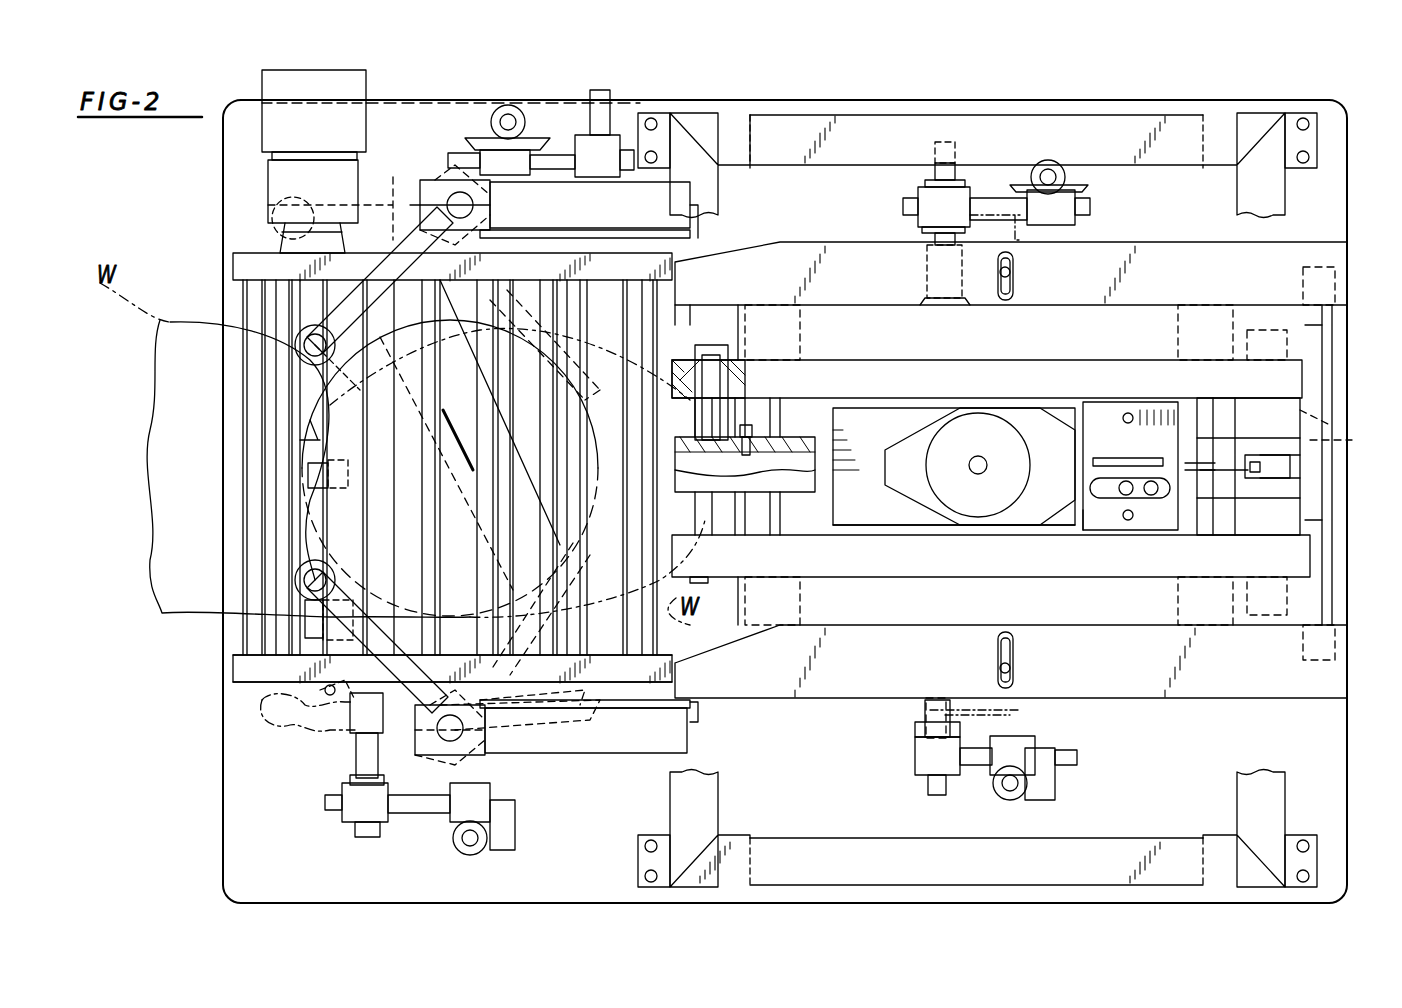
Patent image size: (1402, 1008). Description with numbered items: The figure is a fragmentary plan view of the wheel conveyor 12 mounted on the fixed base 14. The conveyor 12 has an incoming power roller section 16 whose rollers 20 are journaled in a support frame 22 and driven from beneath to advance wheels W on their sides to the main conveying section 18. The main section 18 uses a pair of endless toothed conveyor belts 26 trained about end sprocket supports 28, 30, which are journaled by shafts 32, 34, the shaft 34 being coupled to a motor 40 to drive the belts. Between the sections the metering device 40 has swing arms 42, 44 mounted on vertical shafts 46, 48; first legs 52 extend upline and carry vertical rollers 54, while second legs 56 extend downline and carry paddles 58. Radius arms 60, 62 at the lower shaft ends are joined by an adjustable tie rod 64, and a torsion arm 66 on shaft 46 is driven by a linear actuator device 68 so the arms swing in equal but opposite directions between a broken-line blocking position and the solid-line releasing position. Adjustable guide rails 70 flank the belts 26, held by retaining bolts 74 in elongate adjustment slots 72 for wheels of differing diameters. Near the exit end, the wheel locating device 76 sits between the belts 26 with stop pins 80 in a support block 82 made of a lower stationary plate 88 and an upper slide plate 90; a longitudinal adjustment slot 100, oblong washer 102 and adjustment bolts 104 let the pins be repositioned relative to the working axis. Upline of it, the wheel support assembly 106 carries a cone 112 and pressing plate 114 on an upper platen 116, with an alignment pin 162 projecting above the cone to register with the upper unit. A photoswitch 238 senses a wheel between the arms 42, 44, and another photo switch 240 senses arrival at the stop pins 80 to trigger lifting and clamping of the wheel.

The wheel conveyor 12 is at (200, 654).
The fixed base 14 is at (212, 866).
The incoming power roller section 16 is at (247, 686).
The main conveying section 18 is at (1300, 380).
The rollers 20 is at (245, 300).
The support frame 22 is at (255, 258).
The endless toothed conveyor belts 26 is at (855, 340).
The end sprocket support 28 is at (708, 360).
The end sprocket support 30 is at (1268, 340).
The shaft 32 is at (712, 388).
The shaft 34 is at (1344, 433).
The metering device 40 is at (435, 150).
The swing arm 42 is at (568, 765).
The swing arm 44 is at (420, 180).
The vertical shaft 46 is at (465, 745).
The vertical shaft 48 is at (460, 192).
The first legs 52 is at (340, 270).
The vertical rollers 54 is at (300, 352).
The second legs 56 is at (692, 215).
The paddles 58 is at (688, 238).
The radius arm 60 is at (540, 725).
The radius arm 62 is at (415, 210).
The tie rod 64 is at (455, 410).
The torsion arm 66 is at (360, 735).
The linear actuator device 68 is at (300, 620).
The adjustable guide rails 70 is at (1185, 242).
The adjustment slots 72 is at (1012, 292).
The retaining bolts 74 is at (1012, 280).
The wheel locating device 76 is at (1160, 398).
The stop pins 80 is at (1125, 395).
The support block 82 is at (1088, 395).
The lower stationary plate 88 is at (1185, 535).
The upper slide plate 90 is at (1090, 520).
The longitudinal adjustment slot 100 is at (1060, 515).
The oblong washer 102 is at (1128, 500).
The adjustment bolts 104 is at (1126, 480).
The wheel support assembly 106 is at (995, 398).
The cone 112 is at (965, 425).
The pressing plate 114 is at (918, 505).
The upper platen 116 is at (880, 530).
The alignment pin 162 is at (980, 475).
The photoswitch 238 is at (562, 128).
The photo switch 240 is at (1020, 180).